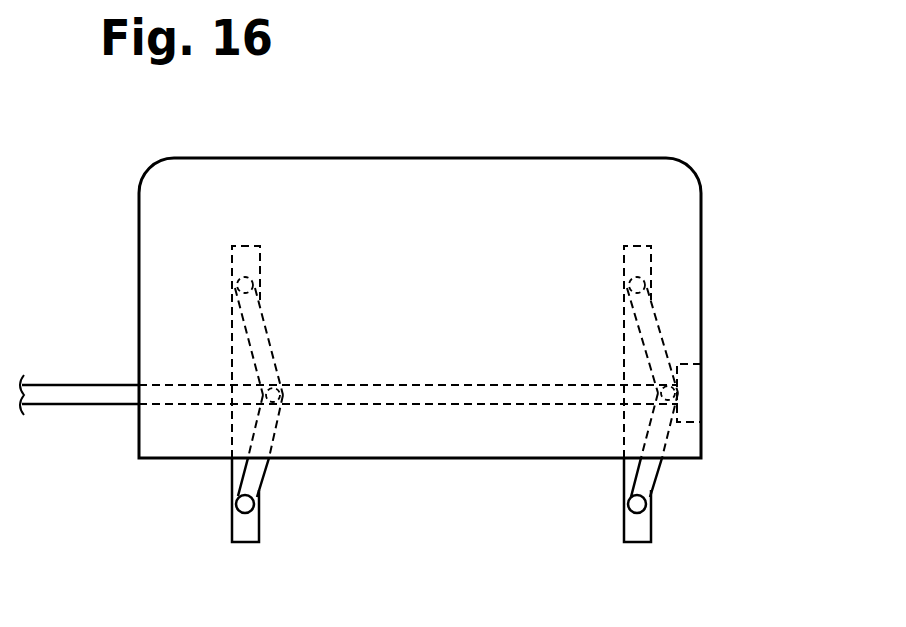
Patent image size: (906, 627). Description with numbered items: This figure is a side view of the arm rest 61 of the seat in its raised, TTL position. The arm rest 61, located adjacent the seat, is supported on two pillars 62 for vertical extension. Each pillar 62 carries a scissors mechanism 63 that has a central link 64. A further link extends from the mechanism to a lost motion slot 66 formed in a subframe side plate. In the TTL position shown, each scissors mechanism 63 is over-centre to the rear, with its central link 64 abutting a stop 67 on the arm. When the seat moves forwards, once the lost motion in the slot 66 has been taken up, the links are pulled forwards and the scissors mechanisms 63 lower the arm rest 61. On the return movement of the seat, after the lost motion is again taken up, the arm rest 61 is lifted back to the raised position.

The arm rest 61 is at (457, 175).
The pillar 62 is at (232, 474).
The scissors mechanism 63 is at (270, 430).
The central link 64 is at (465, 405).
The lost motion slot 66 is at (86, 385).
The stop 67 is at (707, 403).